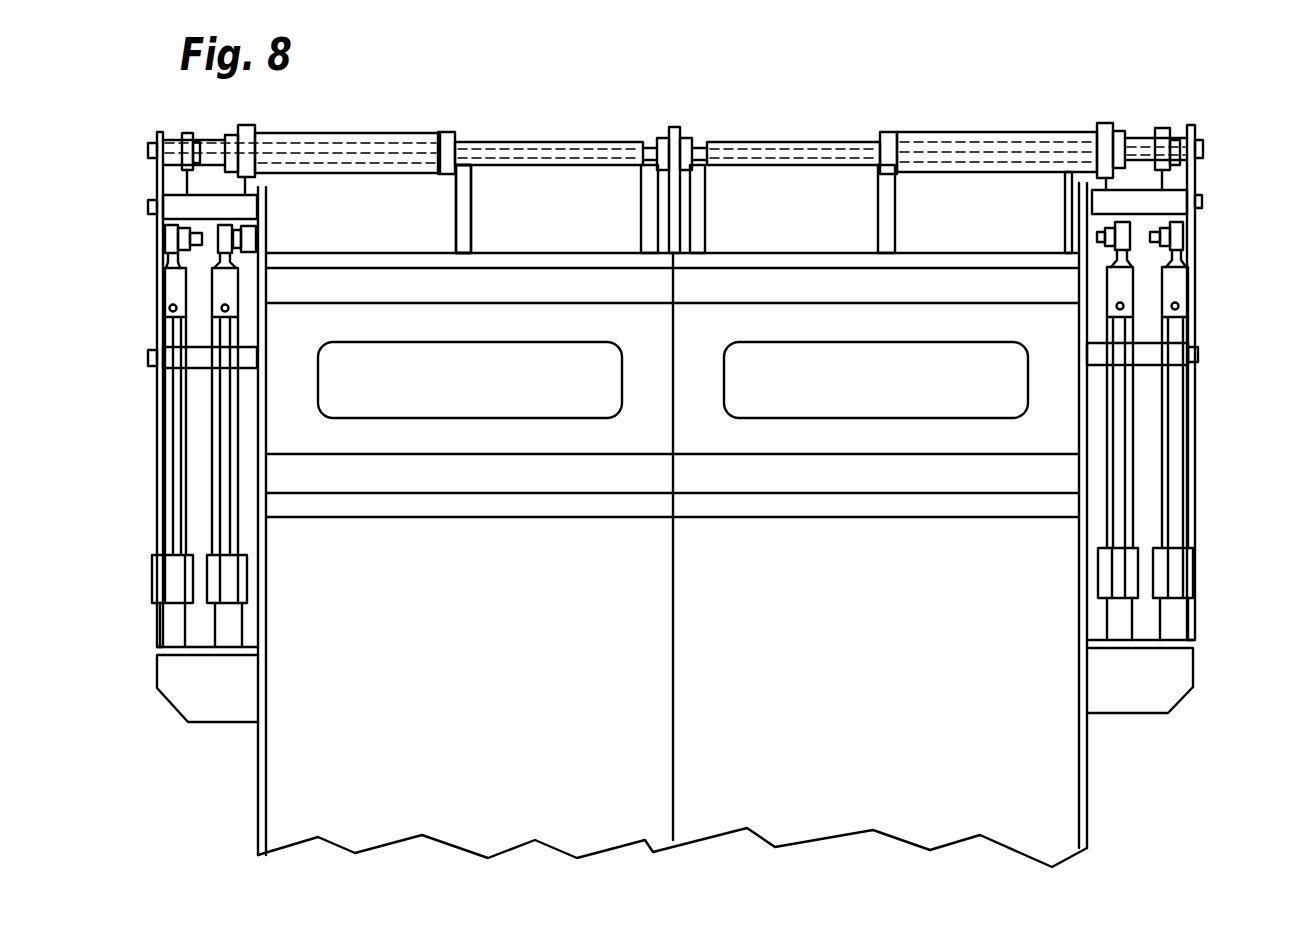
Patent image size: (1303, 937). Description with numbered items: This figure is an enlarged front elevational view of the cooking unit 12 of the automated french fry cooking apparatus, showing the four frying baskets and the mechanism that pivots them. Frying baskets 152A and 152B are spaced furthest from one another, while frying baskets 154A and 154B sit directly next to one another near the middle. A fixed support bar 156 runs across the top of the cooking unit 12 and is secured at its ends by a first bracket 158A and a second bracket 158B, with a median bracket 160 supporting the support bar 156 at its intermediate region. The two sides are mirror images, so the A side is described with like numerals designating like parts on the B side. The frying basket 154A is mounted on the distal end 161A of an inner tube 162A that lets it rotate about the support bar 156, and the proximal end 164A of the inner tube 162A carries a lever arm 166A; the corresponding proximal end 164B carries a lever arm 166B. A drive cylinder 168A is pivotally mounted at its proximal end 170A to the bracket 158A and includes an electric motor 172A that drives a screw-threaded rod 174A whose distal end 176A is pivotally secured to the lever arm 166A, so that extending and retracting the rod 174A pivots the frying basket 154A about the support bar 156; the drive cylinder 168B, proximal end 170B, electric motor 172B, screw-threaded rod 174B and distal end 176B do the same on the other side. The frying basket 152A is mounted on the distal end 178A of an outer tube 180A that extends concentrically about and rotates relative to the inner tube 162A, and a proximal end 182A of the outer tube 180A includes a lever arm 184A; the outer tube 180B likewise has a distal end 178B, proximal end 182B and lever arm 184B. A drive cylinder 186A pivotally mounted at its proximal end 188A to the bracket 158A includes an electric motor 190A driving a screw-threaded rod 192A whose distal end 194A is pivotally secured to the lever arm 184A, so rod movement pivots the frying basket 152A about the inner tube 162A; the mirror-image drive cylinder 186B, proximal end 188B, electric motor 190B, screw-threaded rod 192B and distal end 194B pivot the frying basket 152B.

The cooking unit 12 is at (1092, 748).
The frying basket 152A is at (380, 126).
The frying basket 152B is at (1040, 106).
The frying basket 154A is at (562, 133).
The frying basket 154B is at (789, 135).
The fixed support bar 156 is at (703, 145).
The first bracket 158A is at (157, 172).
The second bracket 158B is at (1202, 168).
The median bracket 160 is at (682, 142).
The distal end of inner tube 161A is at (603, 140).
The inner tube 162A is at (504, 167).
The proximal end of inner tube 164A is at (210, 138).
The proximal end of inner tube 164B is at (1142, 137).
The lever arm 166A is at (160, 207).
The lever arm 166B is at (1197, 180).
The drive cylinder 168A is at (172, 525).
The drive cylinder 168B is at (1172, 483).
The proximal end of drive cylinder 170A is at (172, 622).
The proximal end of drive cylinder 170B is at (1177, 620).
The electric motor 172A is at (170, 573).
The electric motor 172B is at (1178, 570).
The screw-threaded rod 174A is at (173, 288).
The screw-threaded rod 174B is at (1177, 282).
The distal end of screw-threaded rod 176A is at (165, 238).
The distal end of screw-threaded rod 176B is at (1183, 232).
The distal end of outer tube 178A is at (425, 132).
The distal end of outer tube 178B is at (895, 132).
The outer tube 180A is at (308, 132).
The outer tube 180B is at (963, 130).
The proximal end of outer tube 182A is at (228, 178).
The proximal end of outer tube 182B is at (1126, 130).
The lever arm 184A is at (235, 226).
The lever arm 184B is at (1110, 225).
The drive cylinder 186A is at (228, 416).
The drive cylinder 186B is at (1118, 460).
The proximal end of drive cylinder 188A is at (230, 623).
The proximal end of drive cylinder 188B is at (1122, 620).
The electric motor 190A is at (245, 573).
The electric motor 190B is at (1113, 572).
The screw-threaded rod 192A is at (230, 297).
The screw-threaded rod 192B is at (1148, 305).
The distal end of screw-threaded rod 194A is at (238, 253).
The distal end of screw-threaded rod 194B is at (1118, 245).